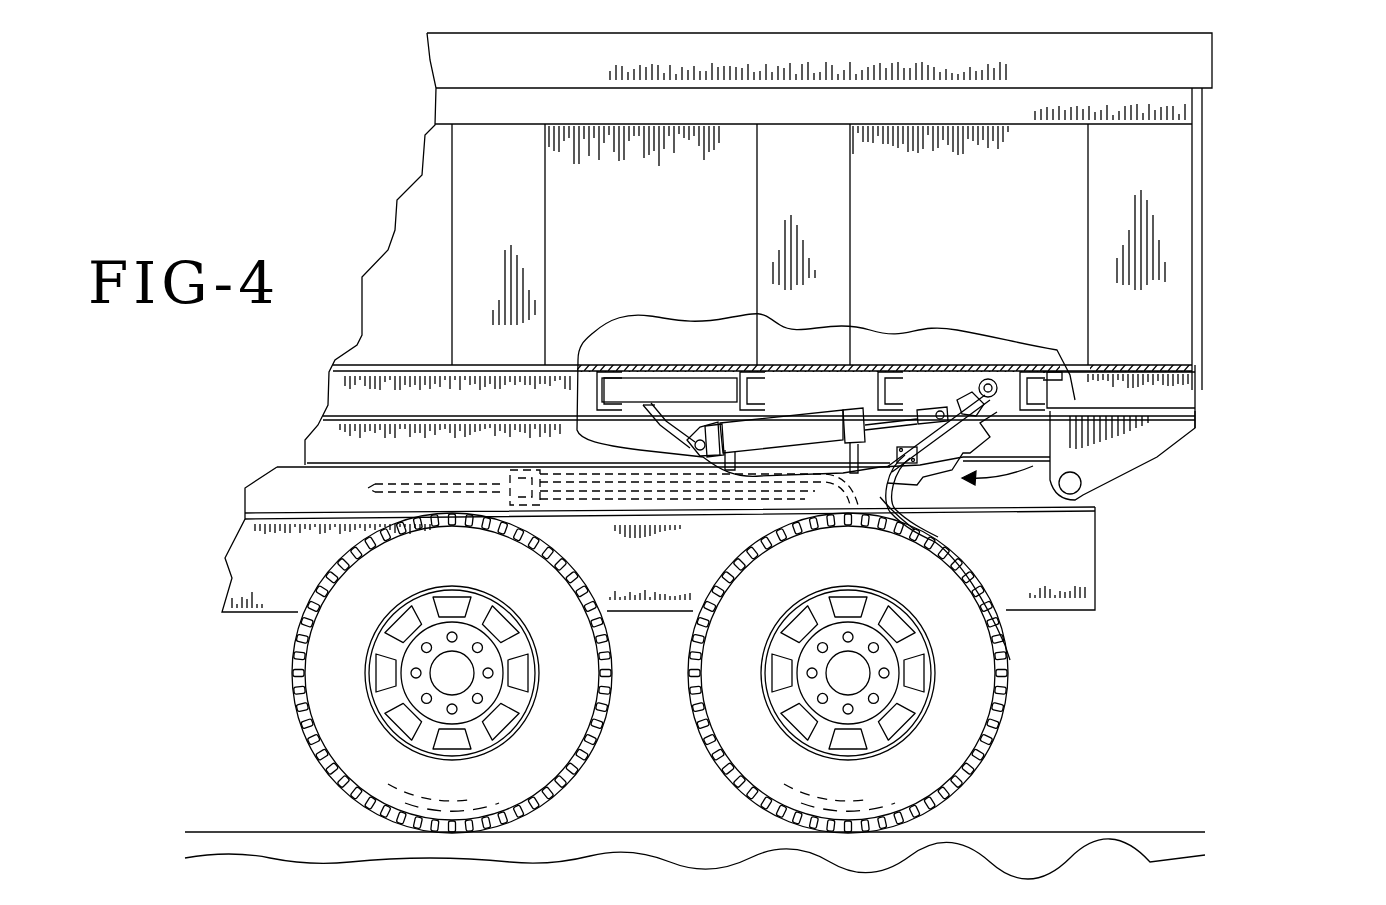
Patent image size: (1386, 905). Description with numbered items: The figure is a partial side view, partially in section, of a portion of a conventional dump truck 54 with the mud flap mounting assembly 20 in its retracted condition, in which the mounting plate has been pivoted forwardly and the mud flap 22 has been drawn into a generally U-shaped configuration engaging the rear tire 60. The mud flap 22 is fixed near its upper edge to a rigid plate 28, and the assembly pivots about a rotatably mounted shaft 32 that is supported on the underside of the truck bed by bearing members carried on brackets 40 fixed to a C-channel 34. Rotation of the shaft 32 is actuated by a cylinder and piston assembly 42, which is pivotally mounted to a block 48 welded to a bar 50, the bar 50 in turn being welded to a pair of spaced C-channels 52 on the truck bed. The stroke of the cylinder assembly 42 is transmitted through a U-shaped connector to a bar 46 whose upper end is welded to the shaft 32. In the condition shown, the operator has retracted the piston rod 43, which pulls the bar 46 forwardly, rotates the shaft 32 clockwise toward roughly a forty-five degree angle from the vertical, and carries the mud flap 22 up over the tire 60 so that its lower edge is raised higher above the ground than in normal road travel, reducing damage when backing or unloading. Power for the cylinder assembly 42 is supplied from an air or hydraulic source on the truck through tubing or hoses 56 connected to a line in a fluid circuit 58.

The mud flap mounting assembly 20 is at (1012, 433).
The mud flap 22 is at (1010, 633).
The rigid plate 28 is at (940, 425).
The shaft 32 is at (981, 383).
The C-channel 34 is at (1040, 372).
The bracket 40 is at (1003, 383).
The cylinder and piston assembly 42 is at (787, 443).
The piston rod 43 is at (900, 447).
The bar 46 is at (945, 398).
The block 48 is at (640, 452).
The bar 50 is at (648, 390).
The C-channels 52 is at (607, 368).
The dump truck 54 is at (1247, 124).
The tubing or hoses 56 is at (583, 480).
The fluid circuit 58 is at (510, 477).
The rear tire 60 is at (693, 728).